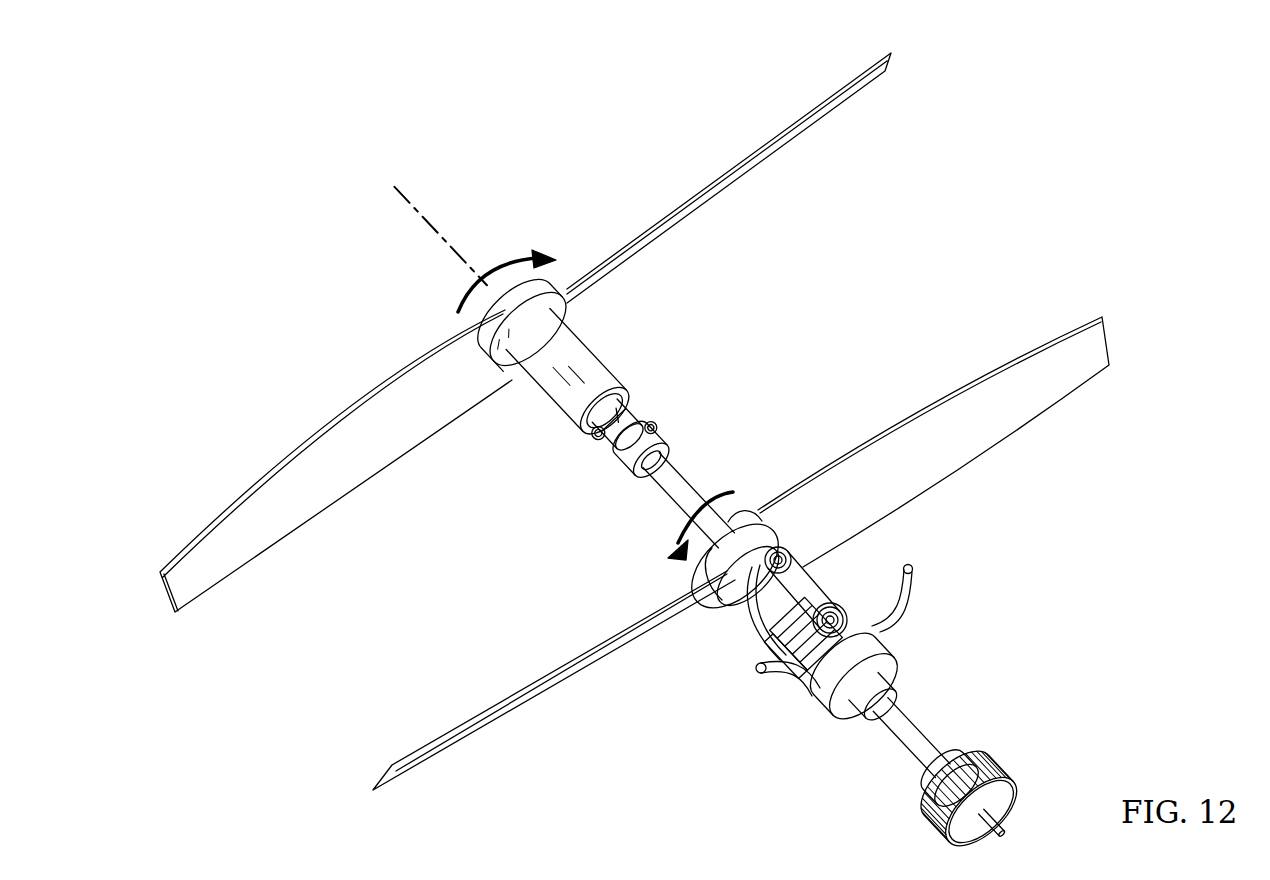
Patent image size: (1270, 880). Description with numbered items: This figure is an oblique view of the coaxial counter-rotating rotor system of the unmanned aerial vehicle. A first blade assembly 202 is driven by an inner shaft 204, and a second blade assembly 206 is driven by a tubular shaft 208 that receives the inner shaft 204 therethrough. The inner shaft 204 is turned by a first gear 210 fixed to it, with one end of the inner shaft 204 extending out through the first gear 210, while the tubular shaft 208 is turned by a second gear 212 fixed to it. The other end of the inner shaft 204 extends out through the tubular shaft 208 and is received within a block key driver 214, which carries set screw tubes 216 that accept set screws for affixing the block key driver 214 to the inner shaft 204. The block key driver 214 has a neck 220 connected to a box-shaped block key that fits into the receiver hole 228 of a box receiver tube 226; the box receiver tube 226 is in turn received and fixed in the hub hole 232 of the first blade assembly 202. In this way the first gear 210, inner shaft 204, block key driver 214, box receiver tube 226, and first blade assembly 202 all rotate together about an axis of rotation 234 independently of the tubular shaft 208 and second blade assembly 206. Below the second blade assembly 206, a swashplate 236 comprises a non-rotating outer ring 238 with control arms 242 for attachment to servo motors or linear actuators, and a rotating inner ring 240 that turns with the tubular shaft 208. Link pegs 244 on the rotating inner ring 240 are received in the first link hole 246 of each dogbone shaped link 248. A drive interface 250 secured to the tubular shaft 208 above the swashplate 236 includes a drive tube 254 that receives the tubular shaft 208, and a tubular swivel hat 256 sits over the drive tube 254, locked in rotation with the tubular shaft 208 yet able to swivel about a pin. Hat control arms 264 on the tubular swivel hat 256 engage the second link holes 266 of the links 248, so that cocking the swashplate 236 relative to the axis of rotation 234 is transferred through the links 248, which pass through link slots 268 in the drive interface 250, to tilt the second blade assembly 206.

The first blade assembly 202 is at (556, 286).
The inner shaft 204 is at (1010, 827).
The second blade assembly 206 is at (742, 520).
The tubular shaft 208 is at (940, 740).
The first gear 210 is at (1022, 781).
The second gear 212 is at (1000, 772).
The block key driver 214 is at (640, 418).
The set screw tubes 216 is at (660, 432).
The neck 220 is at (622, 398).
The box receiver tube 226 is at (596, 366).
The receiver hole 228 is at (592, 439).
The hub hole 232 is at (530, 378).
The axis of rotation 234 is at (411, 203).
The swashplate 236 is at (828, 740).
The non-rotating outer ring 238 is at (898, 664).
The rotating inner ring 240 is at (816, 690).
The control arms 242 is at (906, 612).
The link pegs 244 is at (852, 604).
The first link hole 246 is at (900, 624).
The link 248 is at (822, 545).
The drive interface 250 is at (752, 644).
The drive tube 254 is at (738, 612).
The tubular swivel hat 256 is at (692, 572).
The hat control arms 264 is at (784, 530).
The second link holes 266 is at (792, 553).
The link slots 268 is at (870, 556).